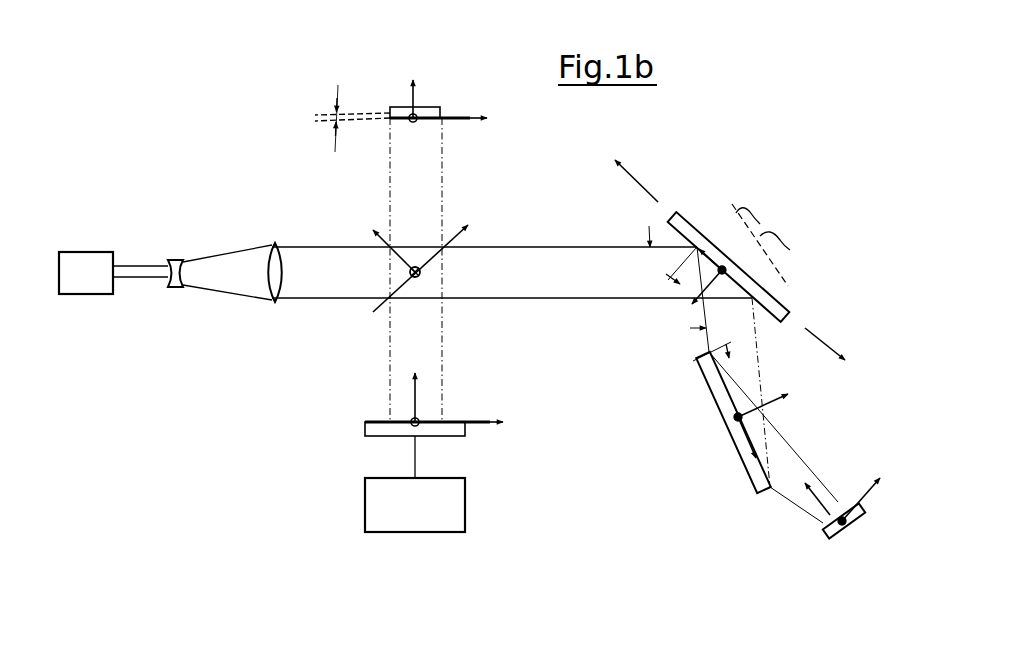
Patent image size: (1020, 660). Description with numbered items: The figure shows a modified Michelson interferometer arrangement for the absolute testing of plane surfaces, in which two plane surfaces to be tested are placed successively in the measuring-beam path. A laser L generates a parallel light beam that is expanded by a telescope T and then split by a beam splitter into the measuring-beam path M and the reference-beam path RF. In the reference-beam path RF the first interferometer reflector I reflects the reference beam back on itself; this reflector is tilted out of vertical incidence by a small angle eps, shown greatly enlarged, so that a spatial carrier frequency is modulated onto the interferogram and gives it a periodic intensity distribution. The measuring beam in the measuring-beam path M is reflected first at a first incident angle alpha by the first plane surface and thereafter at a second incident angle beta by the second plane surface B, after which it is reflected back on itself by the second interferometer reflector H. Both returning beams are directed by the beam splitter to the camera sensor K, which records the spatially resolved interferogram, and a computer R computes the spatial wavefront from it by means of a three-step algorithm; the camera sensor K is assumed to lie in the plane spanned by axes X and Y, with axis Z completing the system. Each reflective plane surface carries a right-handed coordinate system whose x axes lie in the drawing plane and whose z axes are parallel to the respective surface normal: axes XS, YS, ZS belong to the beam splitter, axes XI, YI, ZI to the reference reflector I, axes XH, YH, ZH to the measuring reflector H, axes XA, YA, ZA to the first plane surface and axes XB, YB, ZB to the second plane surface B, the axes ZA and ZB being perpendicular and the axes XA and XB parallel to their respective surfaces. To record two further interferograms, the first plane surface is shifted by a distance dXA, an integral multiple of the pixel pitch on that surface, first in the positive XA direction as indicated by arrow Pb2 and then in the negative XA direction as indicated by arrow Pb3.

The laser L is at (82, 252).
The telescope T is at (270, 243).
The measuring-beam path M is at (565, 257).
The first interferometer reflector I is at (438, 113).
The reference-beam path RF is at (440, 177).
The camera sensor K is at (406, 422).
The computer R is at (467, 498).
The second plane surface B is at (771, 493).
The second interferometer reflector H is at (824, 534).
The arrow for shift in positive x_A direction Pb2 is at (638, 182).
The arrow for shift in negative x_A direction Pb3 is at (822, 340).
The x axis of beam splitter coordinate system XS is at (466, 232).
The y axis of beam splitter coordinate system YS is at (415, 272).
The z axis of beam splitter coordinate system ZS is at (378, 239).
The x axis of reference-beam reflector coordinate system XI is at (460, 120).
The y axis of reference-beam reflector coordinate system YI is at (404, 110).
The z axis of reference-beam reflector coordinate system ZI is at (418, 104).
The x axis X is at (470, 421).
The y axis Y is at (418, 426).
The z axis Z is at (417, 398).
The x axis of first plane surface coordinate system XA is at (708, 255).
The y axis of first plane surface coordinate system YA is at (728, 270).
The z axis of first plane surface coordinate system ZA is at (689, 305).
The shift distance of first plane surface dXA is at (775, 241).
The x axis of second plane surface coordinate system XB is at (744, 443).
The y axis of second plane surface coordinate system YB is at (733, 418).
The z axis of second plane surface coordinate system ZB is at (776, 405).
The x axis of measuring-beam reflector coordinate system XH is at (861, 496).
The y axis of measuring-beam reflector coordinate system YH is at (843, 533).
The z axis of measuring-beam reflector coordinate system ZH is at (822, 505).
The tilt angle of reference-beam reflector eps is at (322, 117).
The first incident angle alpha is at (658, 260).
The second incident angle beta is at (715, 334).